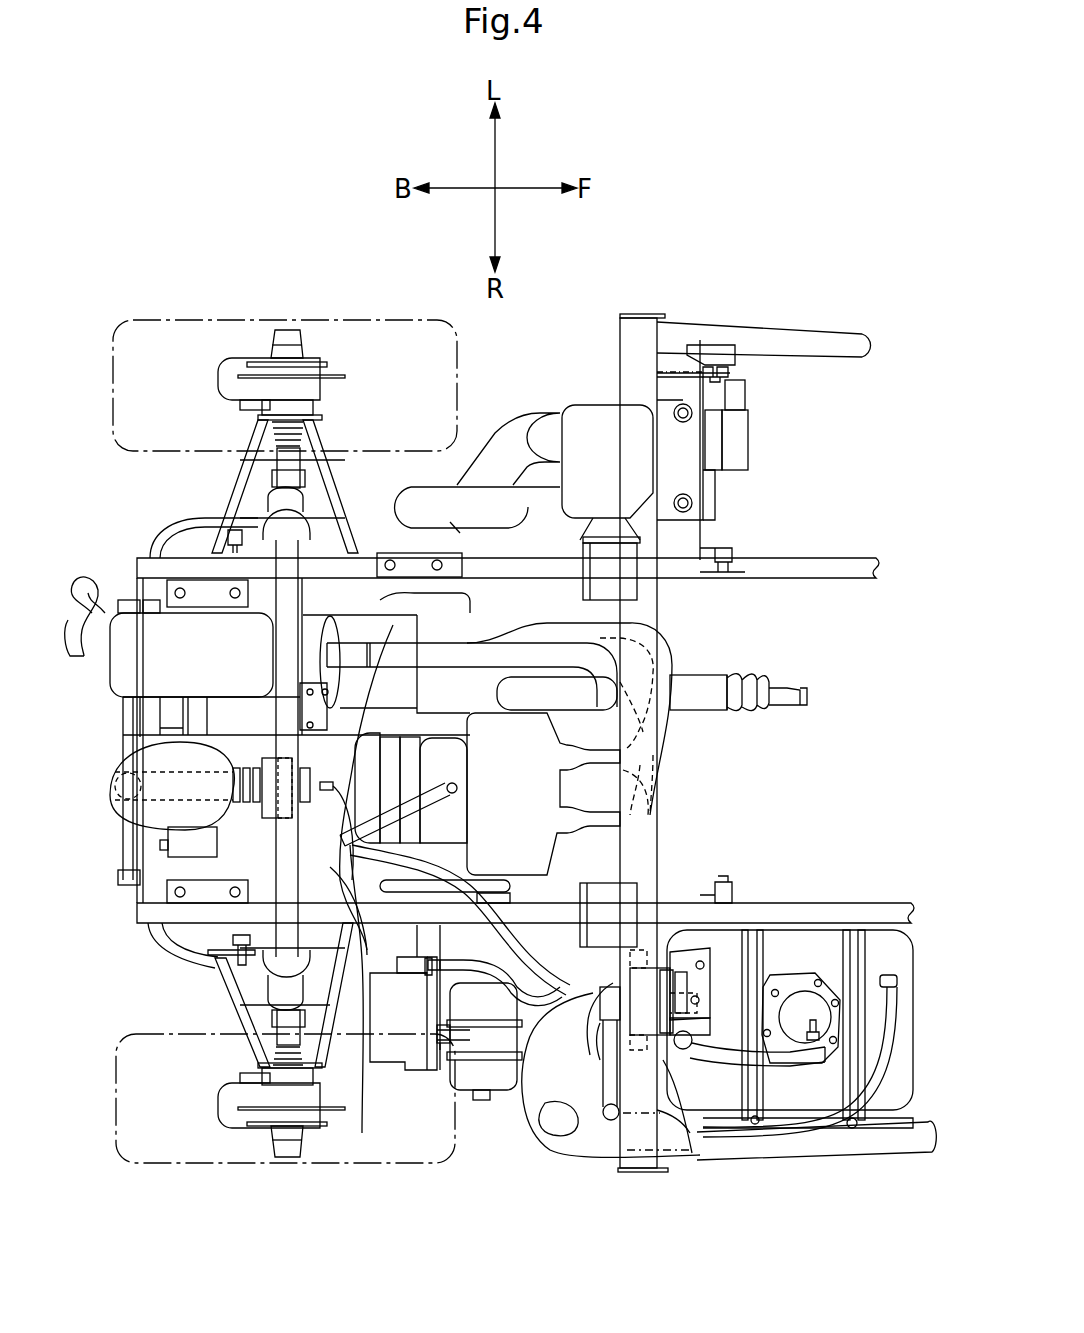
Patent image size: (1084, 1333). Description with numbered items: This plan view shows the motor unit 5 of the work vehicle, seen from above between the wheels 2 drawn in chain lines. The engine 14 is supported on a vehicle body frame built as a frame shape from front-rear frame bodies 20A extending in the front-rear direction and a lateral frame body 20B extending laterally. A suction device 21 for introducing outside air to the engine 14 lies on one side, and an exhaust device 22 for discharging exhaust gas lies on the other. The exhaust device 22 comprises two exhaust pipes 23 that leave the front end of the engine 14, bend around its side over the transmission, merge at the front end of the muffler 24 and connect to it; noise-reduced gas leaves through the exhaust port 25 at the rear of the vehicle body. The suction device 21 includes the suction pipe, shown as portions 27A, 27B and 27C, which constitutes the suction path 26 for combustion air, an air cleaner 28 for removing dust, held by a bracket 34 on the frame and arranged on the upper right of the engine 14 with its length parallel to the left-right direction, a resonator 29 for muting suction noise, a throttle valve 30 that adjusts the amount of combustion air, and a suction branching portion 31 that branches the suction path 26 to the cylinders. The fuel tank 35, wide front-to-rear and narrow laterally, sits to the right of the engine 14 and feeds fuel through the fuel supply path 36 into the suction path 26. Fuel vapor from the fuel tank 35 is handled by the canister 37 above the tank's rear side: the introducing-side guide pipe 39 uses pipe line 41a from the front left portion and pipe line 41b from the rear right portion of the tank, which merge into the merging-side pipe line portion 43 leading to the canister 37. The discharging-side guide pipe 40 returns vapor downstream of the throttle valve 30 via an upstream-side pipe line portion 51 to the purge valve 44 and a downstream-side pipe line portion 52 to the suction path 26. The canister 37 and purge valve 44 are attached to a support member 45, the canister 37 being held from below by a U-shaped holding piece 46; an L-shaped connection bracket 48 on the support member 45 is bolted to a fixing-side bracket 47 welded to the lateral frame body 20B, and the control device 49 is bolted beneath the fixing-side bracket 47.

The wheel 2 is at (190, 318).
The motor unit 5 is at (690, 742).
The engine 14 is at (557, 840).
The front-rear frame bodies 20A is at (165, 567).
The lateral frame body 20B is at (290, 573).
The suction device 21 is at (110, 828).
The exhaust device 22 is at (106, 588).
The exhaust pipes 23 is at (610, 662).
The muffler 24 is at (310, 620).
The exhaust port 25 is at (80, 633).
The suction path 26 is at (405, 997).
The hose 27A is at (527, 1080).
The hose 27B is at (384, 1003).
The hose 27C is at (380, 723).
The air cleaner 28 is at (483, 1077).
The resonator 29 is at (125, 755).
The throttle valve 30 is at (270, 753).
The suction branching portion 31 is at (373, 743).
The bracket 34 is at (457, 1055).
The fuel tank 35 is at (873, 1155).
The fuel supply path 36 is at (440, 800).
The canister 37 is at (705, 968).
The introducing-side guide pipe 39 is at (680, 1100).
The discharging-side guide pipe 40 is at (320, 778).
The pipe line 41a is at (790, 1117).
The pipe line 41b is at (597, 1100).
The merging-side pipe line portion 43 is at (663, 1060).
The purge valve 44 is at (627, 970).
The support member 45 is at (710, 977).
The holding piece 46 is at (703, 1000).
The fixing-side bracket 47 is at (660, 970).
The connection bracket 48 is at (683, 970).
The control device 49 is at (617, 1002).
The upstream-side pipe line portion 51 is at (600, 1030).
The downstream-side pipe line portion 52 is at (522, 983).